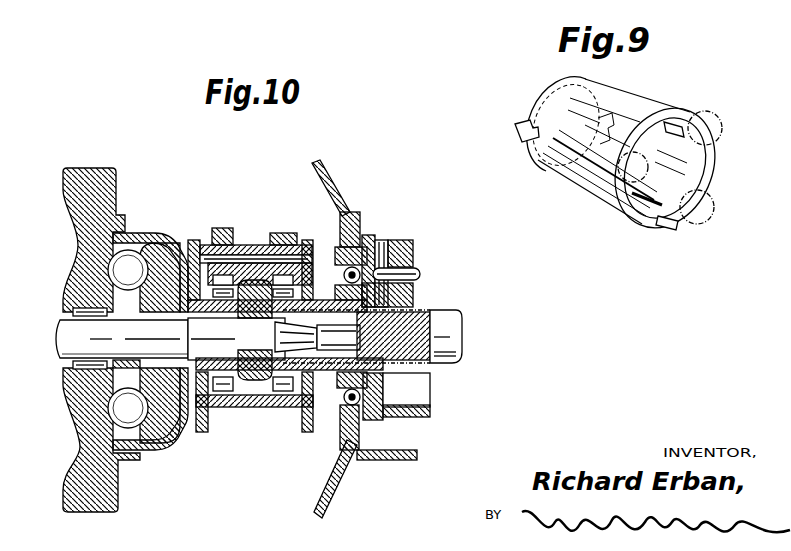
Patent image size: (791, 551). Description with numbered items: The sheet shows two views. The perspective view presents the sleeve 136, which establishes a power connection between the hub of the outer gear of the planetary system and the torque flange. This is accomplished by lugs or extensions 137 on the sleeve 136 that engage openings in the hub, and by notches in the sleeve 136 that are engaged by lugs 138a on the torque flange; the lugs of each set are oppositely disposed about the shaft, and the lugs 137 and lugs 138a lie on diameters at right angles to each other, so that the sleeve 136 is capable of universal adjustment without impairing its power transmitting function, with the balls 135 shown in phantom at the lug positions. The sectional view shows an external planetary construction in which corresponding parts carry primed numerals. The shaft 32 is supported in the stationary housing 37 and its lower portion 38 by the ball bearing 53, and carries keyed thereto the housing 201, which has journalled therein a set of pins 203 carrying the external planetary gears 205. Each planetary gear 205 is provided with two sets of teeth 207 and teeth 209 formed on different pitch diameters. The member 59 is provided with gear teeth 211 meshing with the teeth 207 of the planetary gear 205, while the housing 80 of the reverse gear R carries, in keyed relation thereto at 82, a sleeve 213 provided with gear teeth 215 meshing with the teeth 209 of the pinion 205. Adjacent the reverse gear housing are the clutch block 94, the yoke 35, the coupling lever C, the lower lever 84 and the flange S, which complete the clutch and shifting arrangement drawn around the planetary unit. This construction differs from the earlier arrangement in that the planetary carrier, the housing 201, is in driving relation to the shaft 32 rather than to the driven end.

In FIG. 10, the housing member 37 is at (75, 175).
In FIG. 10, the member 59 is at (143, 233).
In FIG. 10, the ball bearing 53 is at (125, 268).
In FIG. 10, the shaft 32 is at (75, 343).
In FIG. 10, the housing portion 38 is at (153, 428).
In FIG. 10, the pins 203 is at (192, 240).
In FIG. 10, the external planetary gears 205 is at (248, 245).
In FIG. 10, the teeth 207 is at (220, 228).
In FIG. 10, the teeth 209 is at (283, 233).
In FIG. 10, the gear teeth 211 is at (223, 392).
In FIG. 10, the housing 201 is at (242, 400).
In FIG. 10, the gear teeth 215 is at (290, 392).
In FIG. 10, the sleeve 213 is at (325, 388).
In FIG. 10, the coupling lever C is at (323, 177).
In FIG. 10, the housing of the reverse gear 80 is at (373, 262).
In FIG. 10, the clutch block 94 is at (395, 240).
In FIG. 10, the keyed connection 82 is at (413, 296).
In FIG. 10, the reverse gear R is at (435, 297).
In FIG. 10, the yoke 35 is at (430, 357).
In FIG. 10, the lower lever 84 is at (335, 447).
In FIG. 10, the flange S is at (368, 460).
In FIG. 9, the lugs 137 is at (520, 126).
In FIG. 9, the lugs 138a is at (670, 123).
In FIG. 9, the balls 135 is at (722, 113).
In FIG. 9, the sleeve 136 is at (572, 170).